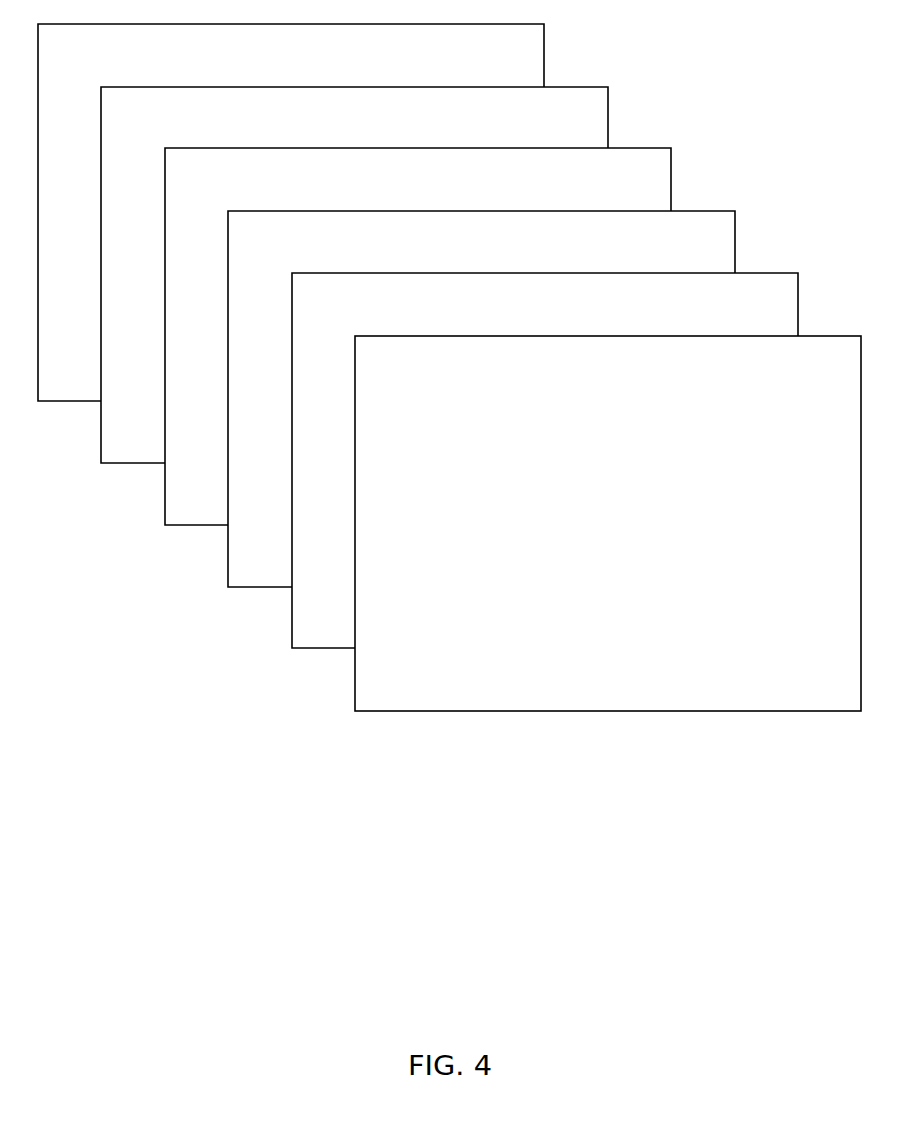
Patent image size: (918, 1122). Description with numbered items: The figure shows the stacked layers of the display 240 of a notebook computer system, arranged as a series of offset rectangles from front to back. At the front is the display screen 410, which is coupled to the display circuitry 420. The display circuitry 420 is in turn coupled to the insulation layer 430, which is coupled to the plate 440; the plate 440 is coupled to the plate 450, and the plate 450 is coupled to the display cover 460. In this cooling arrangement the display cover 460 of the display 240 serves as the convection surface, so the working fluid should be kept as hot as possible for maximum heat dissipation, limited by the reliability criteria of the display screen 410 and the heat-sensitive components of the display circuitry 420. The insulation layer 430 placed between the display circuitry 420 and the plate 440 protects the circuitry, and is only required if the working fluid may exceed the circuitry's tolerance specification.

The display 240 is at (449, 404).
The display screen 410 is at (608, 523).
The display circuitry 420 is at (545, 460).
The insulation layer 430 is at (481, 399).
The plate 440 is at (418, 336).
The plate 450 is at (354, 275).
The display cover 460 is at (291, 212).